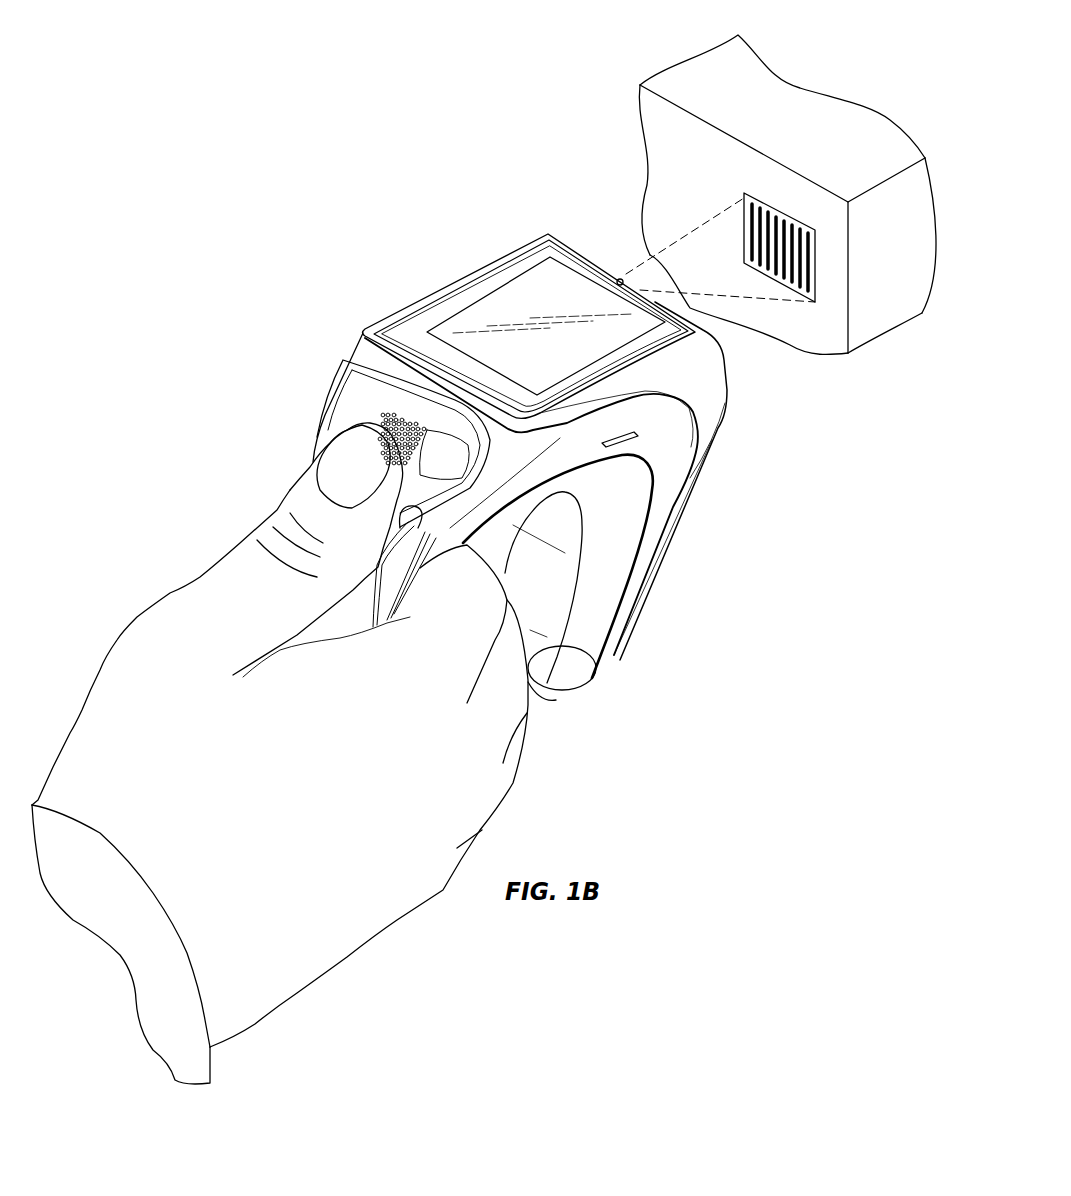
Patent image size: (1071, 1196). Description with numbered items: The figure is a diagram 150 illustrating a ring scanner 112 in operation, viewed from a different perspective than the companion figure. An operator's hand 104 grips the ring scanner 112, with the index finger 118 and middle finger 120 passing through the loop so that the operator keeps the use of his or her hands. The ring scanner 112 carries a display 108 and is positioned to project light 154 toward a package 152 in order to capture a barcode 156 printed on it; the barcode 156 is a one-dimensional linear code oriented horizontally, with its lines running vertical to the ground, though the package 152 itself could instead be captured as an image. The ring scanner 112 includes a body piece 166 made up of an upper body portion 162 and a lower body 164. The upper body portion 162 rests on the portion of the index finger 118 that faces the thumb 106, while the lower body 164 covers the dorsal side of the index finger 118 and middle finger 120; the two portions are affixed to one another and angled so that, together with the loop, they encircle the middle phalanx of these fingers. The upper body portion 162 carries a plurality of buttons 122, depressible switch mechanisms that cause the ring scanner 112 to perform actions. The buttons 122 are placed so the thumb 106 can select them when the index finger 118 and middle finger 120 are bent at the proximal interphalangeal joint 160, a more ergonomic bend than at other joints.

The hand 104 is at (338, 947).
The thumb 106 is at (303, 499).
The display 108 is at (502, 300).
The ring scanner 112 is at (397, 313).
The index finger 118 is at (508, 581).
The middle finger 120 is at (537, 708).
The plurality of buttons 122 is at (316, 394).
The diagram 150 is at (553, 143).
The package 152 is at (922, 318).
The light 154 is at (681, 231).
The barcode 156 is at (820, 262).
The proximal interphalangeal joint 160 is at (567, 662).
The upper body portion 162 is at (745, 322).
The lower body 164 is at (745, 427).
The body piece 166 is at (640, 650).